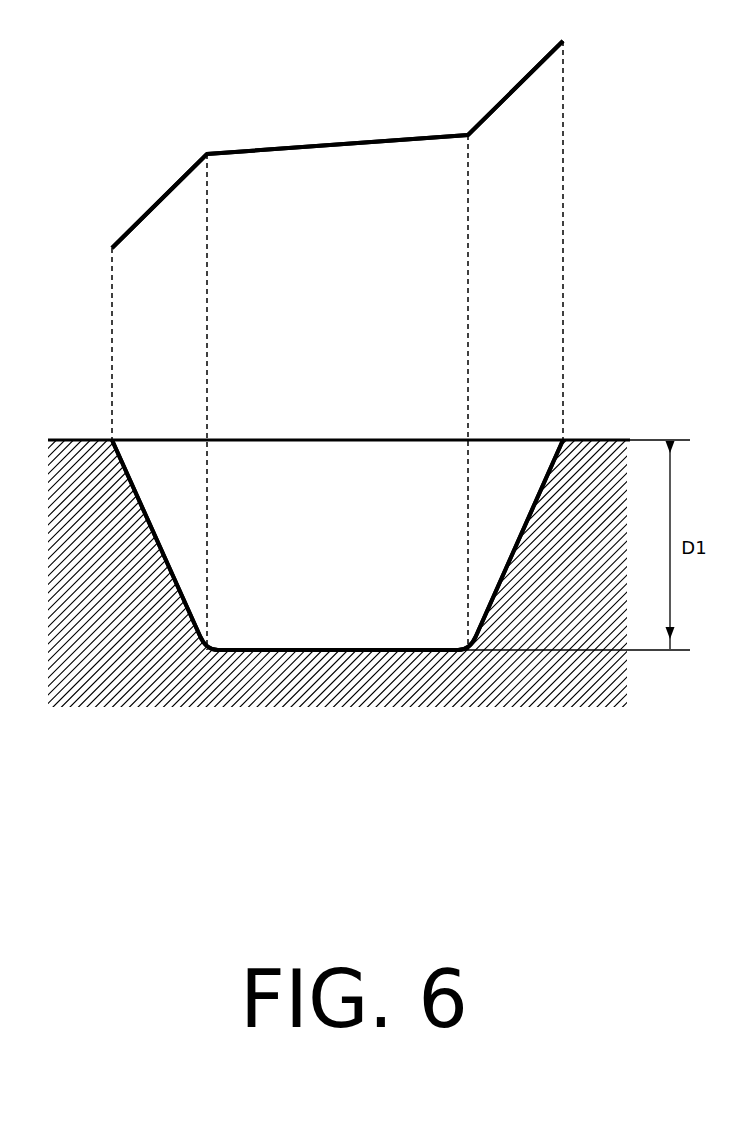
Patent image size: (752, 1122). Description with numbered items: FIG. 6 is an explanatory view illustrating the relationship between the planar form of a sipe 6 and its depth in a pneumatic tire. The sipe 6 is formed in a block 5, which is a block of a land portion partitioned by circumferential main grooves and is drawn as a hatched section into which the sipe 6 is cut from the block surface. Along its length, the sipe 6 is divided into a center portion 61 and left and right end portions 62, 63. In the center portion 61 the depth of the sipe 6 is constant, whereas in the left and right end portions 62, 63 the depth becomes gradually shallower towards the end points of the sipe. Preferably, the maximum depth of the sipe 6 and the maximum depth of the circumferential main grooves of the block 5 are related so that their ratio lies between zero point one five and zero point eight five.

The block 5 is at (616, 438).
The sipe 6 is at (247, 67).
The center portion 61 is at (420, 137).
The end portion 62 is at (535, 68).
The end portion 63 is at (164, 191).